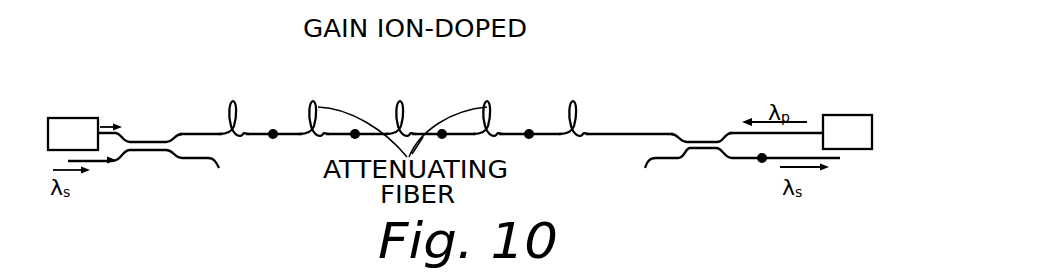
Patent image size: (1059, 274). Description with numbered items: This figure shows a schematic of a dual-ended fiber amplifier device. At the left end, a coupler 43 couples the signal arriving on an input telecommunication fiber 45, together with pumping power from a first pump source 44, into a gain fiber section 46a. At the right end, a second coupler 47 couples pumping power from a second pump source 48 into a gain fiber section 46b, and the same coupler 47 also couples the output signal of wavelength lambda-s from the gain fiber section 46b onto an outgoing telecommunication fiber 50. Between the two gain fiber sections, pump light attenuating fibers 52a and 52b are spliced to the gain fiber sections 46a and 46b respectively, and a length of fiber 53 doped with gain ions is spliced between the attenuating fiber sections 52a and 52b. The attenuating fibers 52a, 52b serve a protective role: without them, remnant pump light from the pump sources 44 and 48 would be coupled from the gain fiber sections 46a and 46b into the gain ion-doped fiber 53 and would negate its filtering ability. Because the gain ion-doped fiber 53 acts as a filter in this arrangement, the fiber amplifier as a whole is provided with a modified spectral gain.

The coupler 43 is at (143, 136).
The first pump source 44 is at (72, 118).
The input telecommunication fiber 45 is at (98, 163).
The gain fiber section 46a is at (234, 101).
The gain fiber section 46b is at (571, 100).
The coupler 47 is at (703, 155).
The second pump source 48 is at (845, 115).
The outgoing telecommunication fiber 50 is at (833, 162).
The pump light attenuating fiber 52a is at (309, 107).
The pump light attenuating fiber 52b is at (490, 108).
The gain ion-doped fiber 53 is at (425, 70).